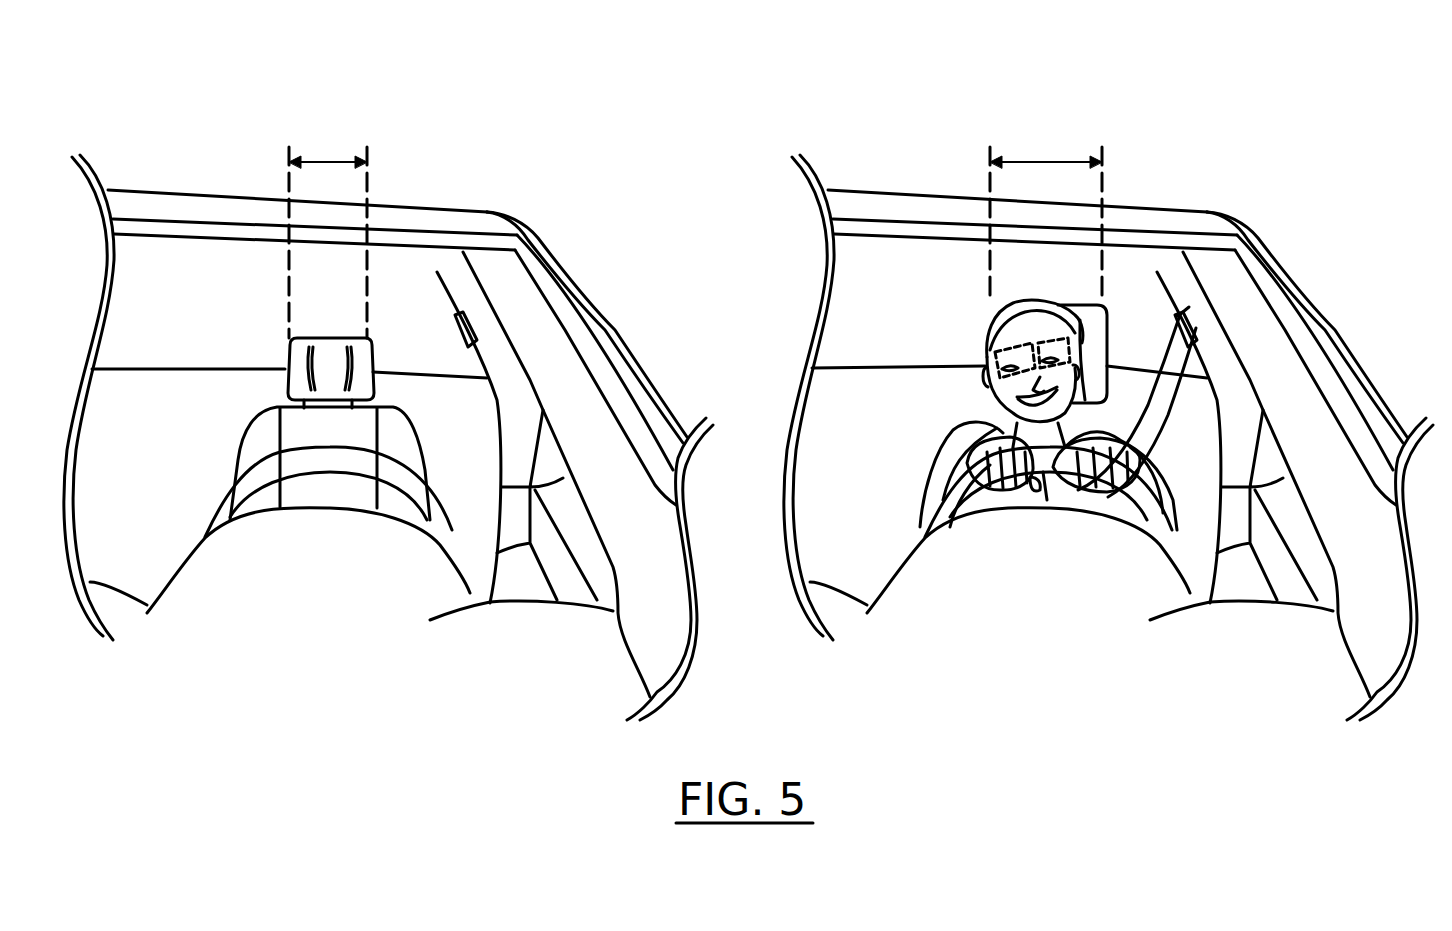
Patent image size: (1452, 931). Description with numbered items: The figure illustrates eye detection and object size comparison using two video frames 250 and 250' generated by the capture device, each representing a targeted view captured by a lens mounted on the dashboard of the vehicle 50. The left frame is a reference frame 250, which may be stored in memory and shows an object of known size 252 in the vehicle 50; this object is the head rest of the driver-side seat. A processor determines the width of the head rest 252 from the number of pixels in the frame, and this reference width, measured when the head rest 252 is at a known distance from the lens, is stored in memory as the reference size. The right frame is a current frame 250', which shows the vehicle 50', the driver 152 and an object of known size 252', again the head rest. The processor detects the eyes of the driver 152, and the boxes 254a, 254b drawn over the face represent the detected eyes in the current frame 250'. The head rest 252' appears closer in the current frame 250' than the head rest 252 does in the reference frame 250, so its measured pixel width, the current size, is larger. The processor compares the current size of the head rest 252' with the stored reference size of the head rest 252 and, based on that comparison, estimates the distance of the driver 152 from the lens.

The video frame 250 is at (388, 387).
The video frame 250' is at (1108, 387).
The vehicle 50 is at (388, 437).
The vehicle 50' is at (1108, 437).
The object of known size 252 is at (298, 359).
The object of known size 252' is at (1119, 343).
The driver 152 is at (983, 337).
The box 254a is at (993, 383).
The box 254b is at (1038, 337).